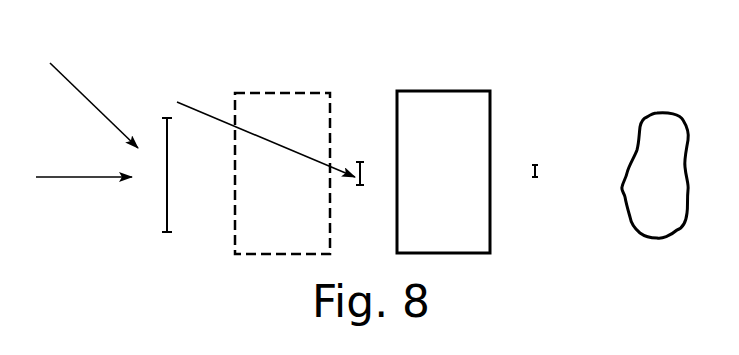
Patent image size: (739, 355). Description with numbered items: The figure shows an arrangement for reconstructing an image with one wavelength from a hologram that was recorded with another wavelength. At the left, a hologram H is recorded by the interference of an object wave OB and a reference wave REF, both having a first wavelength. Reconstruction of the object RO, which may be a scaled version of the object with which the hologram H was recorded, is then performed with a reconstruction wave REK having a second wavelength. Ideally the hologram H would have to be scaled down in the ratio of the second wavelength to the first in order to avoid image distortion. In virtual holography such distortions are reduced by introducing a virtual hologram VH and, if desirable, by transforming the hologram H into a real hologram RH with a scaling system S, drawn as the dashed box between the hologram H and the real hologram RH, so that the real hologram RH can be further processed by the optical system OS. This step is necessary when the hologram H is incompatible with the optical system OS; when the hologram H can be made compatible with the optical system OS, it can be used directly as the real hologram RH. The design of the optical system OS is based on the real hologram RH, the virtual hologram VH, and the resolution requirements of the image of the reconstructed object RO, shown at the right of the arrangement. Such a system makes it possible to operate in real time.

The reference wave REF is at (94, 103).
The object wave OB is at (82, 162).
The hologram H is at (168, 192).
The reconstruction wave REK is at (259, 126).
The scaling system S is at (282, 173).
The real hologram RH is at (361, 189).
The optical system OS is at (443, 172).
The virtual hologram VH is at (535, 190).
The reconstructed object RO is at (655, 193).